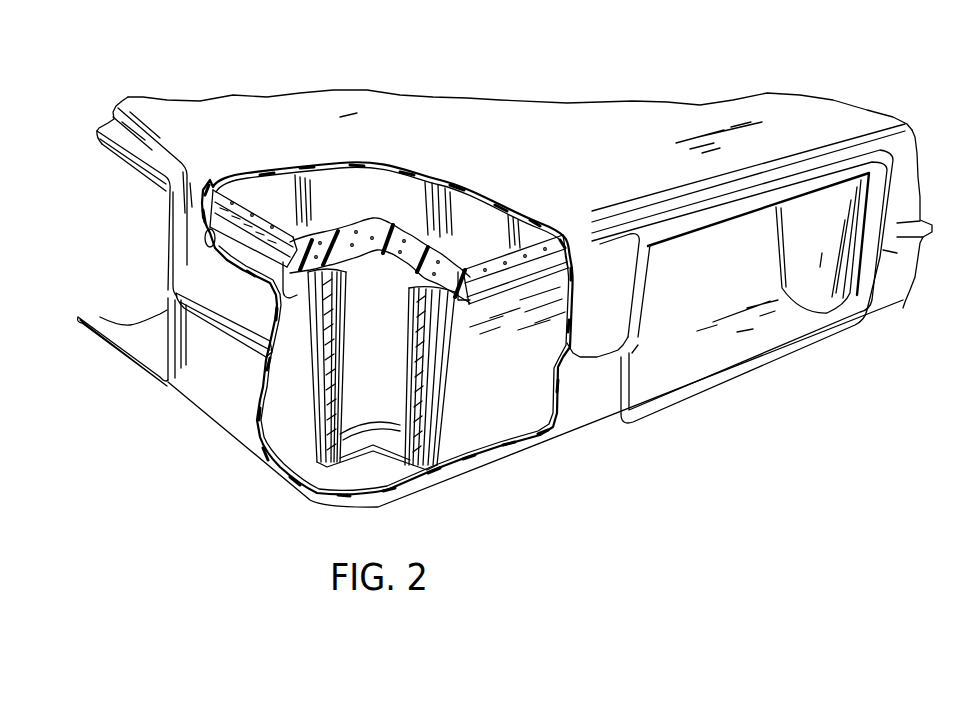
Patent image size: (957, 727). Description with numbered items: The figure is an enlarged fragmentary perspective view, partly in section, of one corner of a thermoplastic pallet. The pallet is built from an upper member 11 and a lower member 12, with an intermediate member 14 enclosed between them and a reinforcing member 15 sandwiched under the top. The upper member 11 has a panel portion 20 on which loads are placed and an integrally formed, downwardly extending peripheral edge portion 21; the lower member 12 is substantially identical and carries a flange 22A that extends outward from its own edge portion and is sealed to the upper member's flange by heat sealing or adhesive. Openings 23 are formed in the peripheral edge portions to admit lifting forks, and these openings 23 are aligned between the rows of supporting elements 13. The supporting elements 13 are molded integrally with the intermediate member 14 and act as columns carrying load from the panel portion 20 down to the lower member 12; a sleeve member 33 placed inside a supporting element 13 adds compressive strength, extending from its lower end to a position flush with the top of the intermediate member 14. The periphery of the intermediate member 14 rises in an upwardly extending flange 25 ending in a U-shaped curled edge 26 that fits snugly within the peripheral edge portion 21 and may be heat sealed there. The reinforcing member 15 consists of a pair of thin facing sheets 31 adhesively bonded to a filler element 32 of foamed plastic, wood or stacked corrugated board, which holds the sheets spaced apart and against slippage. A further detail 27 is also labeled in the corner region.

The upper member 11 is at (128, 97).
The lower member 12 is at (287, 464).
The supporting elements 13 is at (447, 362).
The intermediate member 14 is at (450, 300).
The reinforcing member 15 is at (387, 205).
The panel portion 20 is at (502, 151).
The peripheral edge portion 21 is at (262, 324).
The flange 22A is at (243, 340).
The openings 23 is at (640, 290).
The upwardly extending flange 25 is at (290, 262).
The U-shaped curled edge 26 is at (212, 188).
The fastener 27 is at (204, 250).
The facing sheets 31 is at (462, 284).
The filler element 32 is at (262, 235).
The sleeve member 33 is at (335, 363).